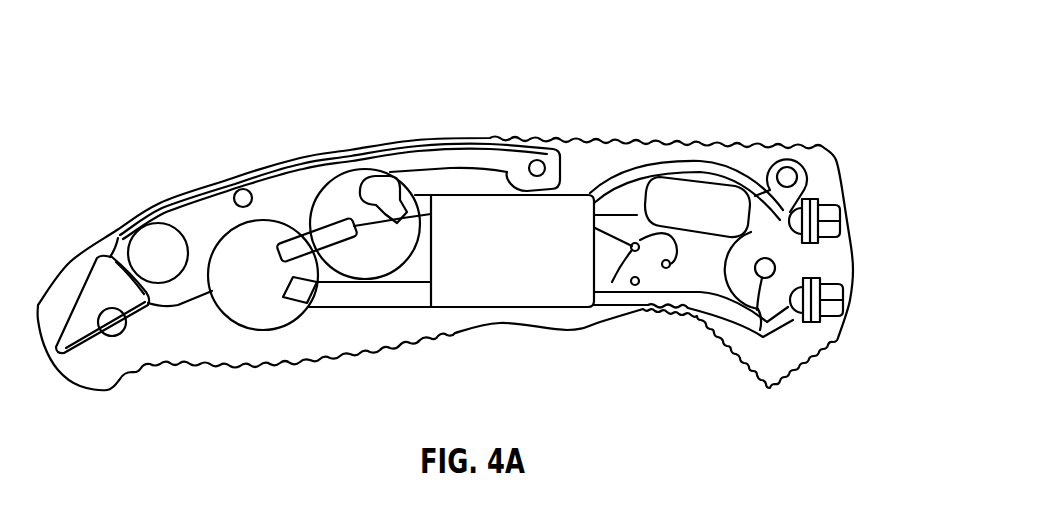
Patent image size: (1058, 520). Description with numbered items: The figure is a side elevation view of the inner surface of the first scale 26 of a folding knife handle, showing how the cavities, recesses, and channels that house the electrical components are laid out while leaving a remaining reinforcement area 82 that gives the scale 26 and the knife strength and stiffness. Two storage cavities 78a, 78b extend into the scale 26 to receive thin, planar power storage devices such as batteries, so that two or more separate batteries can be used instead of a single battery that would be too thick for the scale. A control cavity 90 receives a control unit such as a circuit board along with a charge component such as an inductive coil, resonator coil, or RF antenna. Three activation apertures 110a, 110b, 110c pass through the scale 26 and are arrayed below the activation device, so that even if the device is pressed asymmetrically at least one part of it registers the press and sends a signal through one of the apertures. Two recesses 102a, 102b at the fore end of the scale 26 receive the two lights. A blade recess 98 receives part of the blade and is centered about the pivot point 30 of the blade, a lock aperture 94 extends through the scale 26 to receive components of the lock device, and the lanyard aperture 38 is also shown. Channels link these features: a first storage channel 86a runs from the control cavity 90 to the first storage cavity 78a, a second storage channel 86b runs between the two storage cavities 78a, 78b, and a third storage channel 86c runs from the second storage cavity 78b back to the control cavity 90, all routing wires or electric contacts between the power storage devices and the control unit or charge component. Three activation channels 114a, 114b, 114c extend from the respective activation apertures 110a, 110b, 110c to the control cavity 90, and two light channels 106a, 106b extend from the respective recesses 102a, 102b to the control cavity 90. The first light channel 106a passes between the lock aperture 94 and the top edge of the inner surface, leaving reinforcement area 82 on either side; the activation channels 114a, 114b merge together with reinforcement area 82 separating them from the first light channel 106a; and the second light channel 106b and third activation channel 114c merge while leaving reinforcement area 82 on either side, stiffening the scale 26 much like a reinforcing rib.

The first scale 26 is at (118, 56).
The pivot point 30 is at (757, 300).
The lanyard aperture 38 is at (148, 247).
The first storage cavity 78a is at (233, 253).
The second storage cavity 78b is at (343, 205).
The reinforcement area 82 is at (223, 345).
The first storage channel 86a is at (340, 297).
The second storage channel 86b is at (312, 248).
The third storage channel 86c is at (403, 213).
The control cavity 90 is at (447, 290).
The lock aperture 94 is at (700, 207).
The blade recess 98 is at (737, 273).
The first recess 102a is at (833, 213).
The second recess 102b is at (836, 298).
The first light channel 106a is at (733, 183).
The second light channel 106b is at (782, 320).
The first activation aperture 110a is at (632, 245).
The second activation aperture 110b is at (662, 266).
The third activation aperture 110c is at (633, 285).
The first activation channel 114a is at (632, 244).
The second activation channel 114b is at (627, 238).
The third activation channel 114c is at (656, 290).